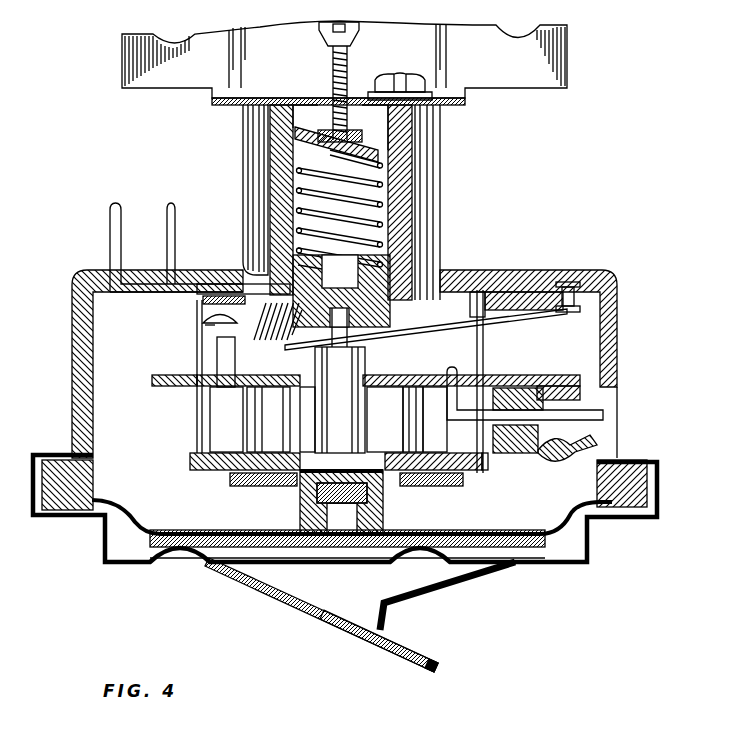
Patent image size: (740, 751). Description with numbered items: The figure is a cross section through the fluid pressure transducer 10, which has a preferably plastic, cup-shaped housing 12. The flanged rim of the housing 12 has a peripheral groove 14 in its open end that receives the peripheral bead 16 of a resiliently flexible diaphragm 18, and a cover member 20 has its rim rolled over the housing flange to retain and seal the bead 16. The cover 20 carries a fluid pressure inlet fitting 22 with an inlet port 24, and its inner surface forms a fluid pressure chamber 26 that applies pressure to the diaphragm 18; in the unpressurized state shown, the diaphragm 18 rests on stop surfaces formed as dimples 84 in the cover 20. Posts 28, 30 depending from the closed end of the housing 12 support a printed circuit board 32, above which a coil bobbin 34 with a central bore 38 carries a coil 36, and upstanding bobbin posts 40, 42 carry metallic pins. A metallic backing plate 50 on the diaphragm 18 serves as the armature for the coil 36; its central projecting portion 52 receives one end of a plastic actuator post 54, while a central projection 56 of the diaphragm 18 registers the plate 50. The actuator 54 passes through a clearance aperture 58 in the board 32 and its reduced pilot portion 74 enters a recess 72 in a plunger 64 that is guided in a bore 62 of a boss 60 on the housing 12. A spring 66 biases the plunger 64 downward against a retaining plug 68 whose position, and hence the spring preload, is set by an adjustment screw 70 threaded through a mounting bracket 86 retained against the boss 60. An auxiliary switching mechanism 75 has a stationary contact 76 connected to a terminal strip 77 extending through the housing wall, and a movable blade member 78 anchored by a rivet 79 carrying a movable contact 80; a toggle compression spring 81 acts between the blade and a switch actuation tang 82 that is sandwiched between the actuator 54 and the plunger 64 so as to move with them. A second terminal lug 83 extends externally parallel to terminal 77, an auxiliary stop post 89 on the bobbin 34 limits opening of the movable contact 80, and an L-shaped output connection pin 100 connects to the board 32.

The transducer 10 is at (168, 165).
The housing 12 is at (617, 338).
The peripheral groove 14 is at (72, 520).
The peripheral bead 16 is at (617, 465).
The diaphragm 18 is at (512, 565).
The cover member 20 is at (440, 598).
The fluid pressure inlet fitting 22 is at (347, 633).
The fluid pressure inlet port 24 is at (443, 662).
The fluid pressure chamber 26 is at (322, 583).
The depending post 28 is at (197, 325).
The depending post 30 is at (486, 343).
The printed circuit board 32 is at (175, 378).
The coil bobbin 34 is at (488, 462).
The coil 36 is at (462, 485).
The central bore 38 is at (375, 462).
The bobbin post 40 is at (260, 415).
The bobbin post 42 is at (430, 413).
The backing plate 50 is at (410, 530).
The projecting portion 52 is at (300, 505).
The actuator post 54 is at (308, 412).
The central projection 56 is at (345, 470).
The clearance aperture 58 is at (375, 380).
The boss 60 is at (243, 186).
The bore 62 is at (362, 190).
The plunger 64 is at (440, 270).
The spring 66 is at (292, 222).
The retaining plug 68 is at (368, 163).
The adjustment screw 70 is at (362, 66).
The recess 72 is at (366, 336).
The pilot portion 74 is at (335, 292).
The auxiliary switching mechanism 75 is at (212, 325).
The stationary contact 76 is at (205, 303).
The terminal strip 77 is at (110, 212).
The movable blade member 78 is at (480, 290).
The rivet 79 is at (572, 282).
The movable contact 80 is at (242, 270).
The toggle compression spring 81 is at (288, 350).
The switch actuation tang 82 is at (522, 290).
The second terminal lug 83 is at (167, 210).
The dimples 84 is at (133, 568).
The mounting bracket 86 is at (568, 42).
The auxiliary stop post 89 is at (217, 362).
The output connection pin 100 is at (603, 413).